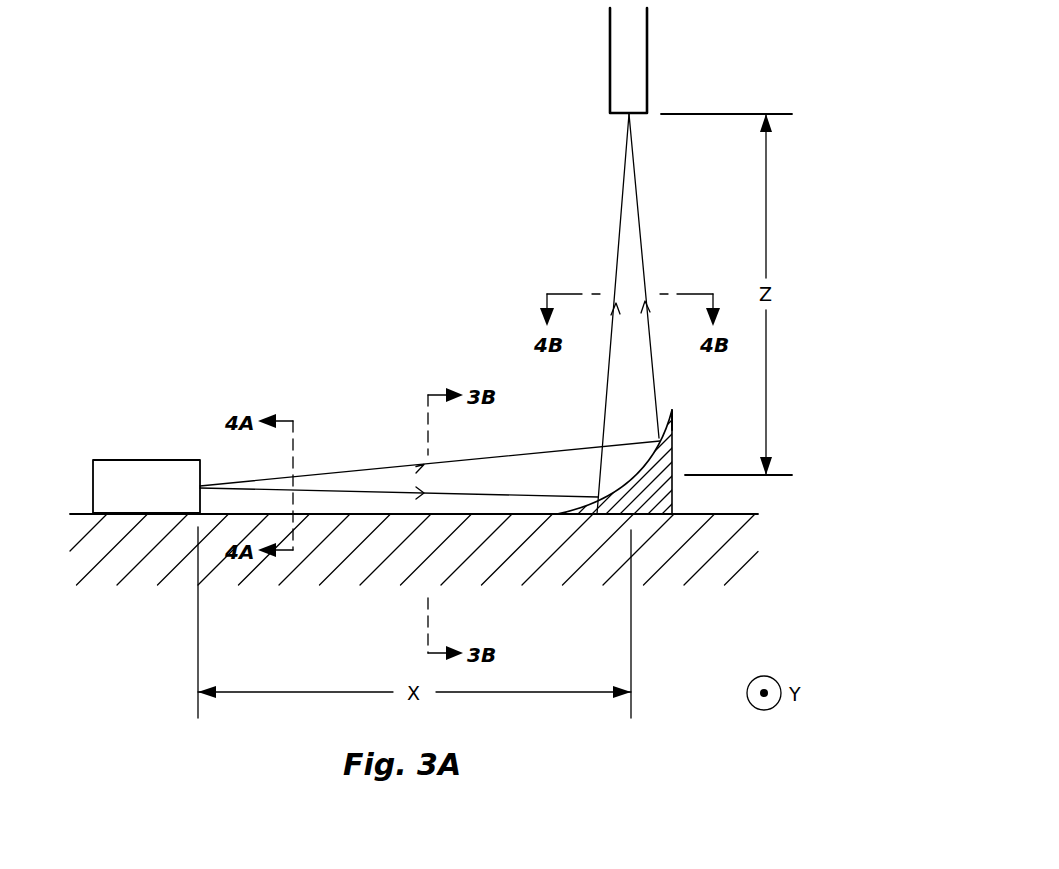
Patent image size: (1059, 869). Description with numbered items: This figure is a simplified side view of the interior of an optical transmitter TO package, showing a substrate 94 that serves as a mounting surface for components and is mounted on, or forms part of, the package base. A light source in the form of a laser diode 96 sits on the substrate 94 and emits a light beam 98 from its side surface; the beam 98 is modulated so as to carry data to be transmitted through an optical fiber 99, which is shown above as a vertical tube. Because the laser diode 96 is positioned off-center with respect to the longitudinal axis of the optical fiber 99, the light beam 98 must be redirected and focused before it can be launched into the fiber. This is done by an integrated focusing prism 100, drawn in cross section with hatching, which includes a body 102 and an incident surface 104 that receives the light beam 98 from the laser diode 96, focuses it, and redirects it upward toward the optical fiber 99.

The substrate 94 is at (386, 561).
The laser diode 96 is at (147, 460).
The light beam 98 is at (566, 470).
The optical fiber 99 is at (610, 62).
The integrated focusing prism 100 is at (688, 492).
The body 102 is at (648, 500).
The incident surface 104 is at (664, 412).